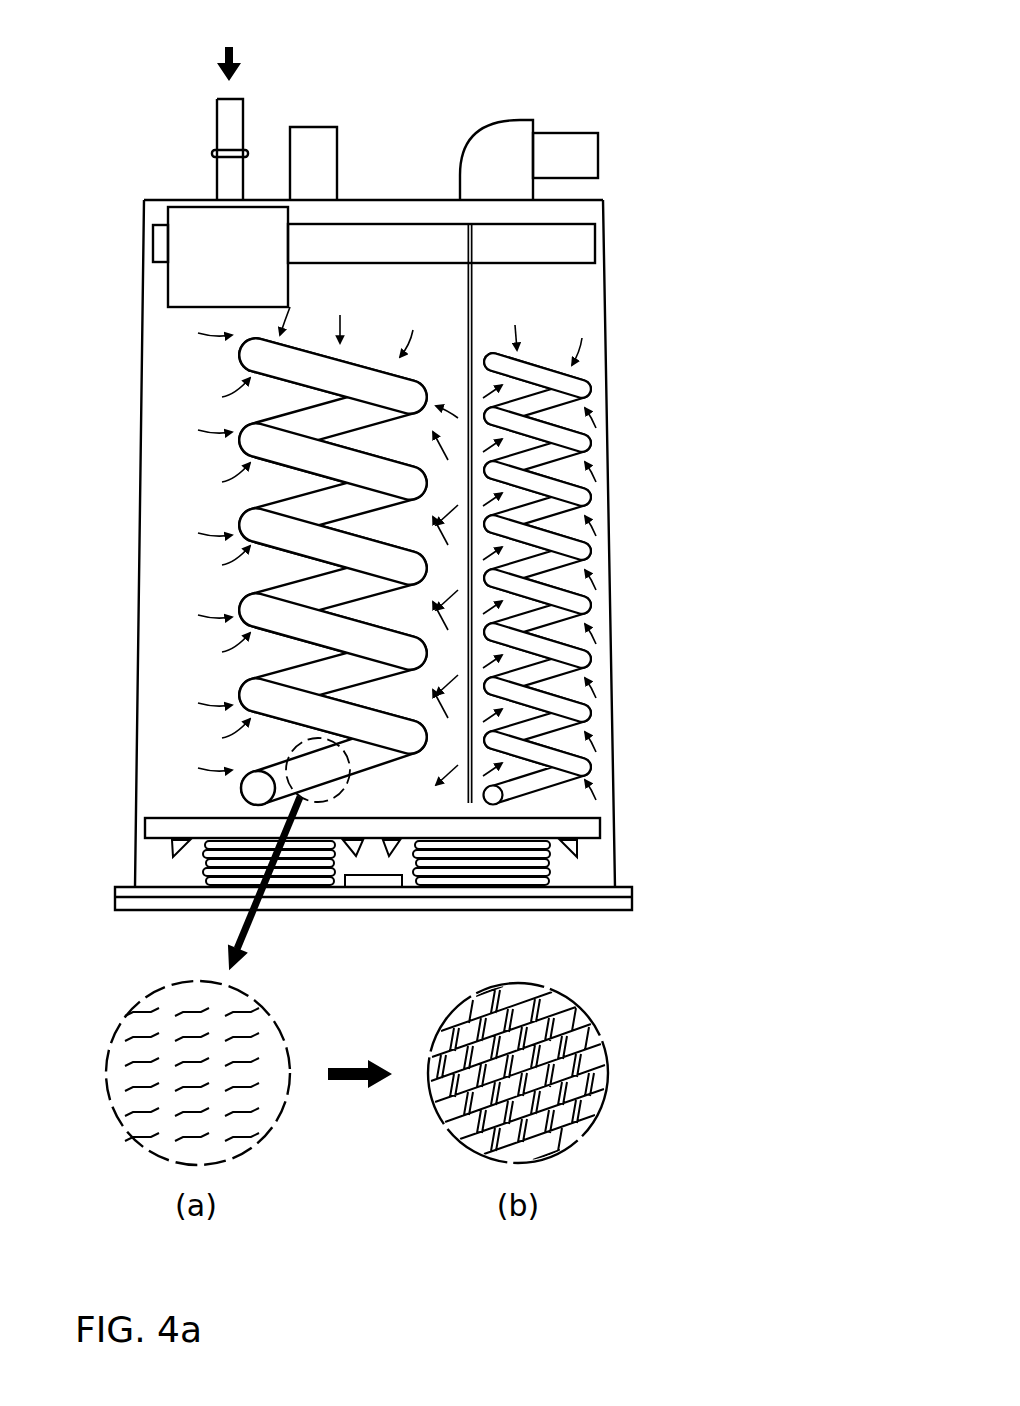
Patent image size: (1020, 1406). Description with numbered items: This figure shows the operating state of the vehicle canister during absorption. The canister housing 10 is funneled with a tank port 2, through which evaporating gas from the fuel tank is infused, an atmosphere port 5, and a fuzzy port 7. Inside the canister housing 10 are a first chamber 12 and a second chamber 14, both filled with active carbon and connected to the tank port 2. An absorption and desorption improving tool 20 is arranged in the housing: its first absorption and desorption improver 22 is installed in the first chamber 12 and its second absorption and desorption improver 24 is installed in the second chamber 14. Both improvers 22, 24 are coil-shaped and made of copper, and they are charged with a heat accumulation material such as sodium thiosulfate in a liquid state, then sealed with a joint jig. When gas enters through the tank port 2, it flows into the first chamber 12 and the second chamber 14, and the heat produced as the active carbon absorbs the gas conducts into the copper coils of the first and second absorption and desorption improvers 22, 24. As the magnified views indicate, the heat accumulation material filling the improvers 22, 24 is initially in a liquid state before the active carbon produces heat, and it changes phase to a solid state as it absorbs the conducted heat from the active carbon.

The tank port 2 is at (228, 108).
The atmosphere port 5 is at (563, 145).
The fuzzy port 7 is at (315, 140).
The canister housing 10 is at (454, 555).
The first chamber 12 is at (443, 337).
The second chamber 14 is at (573, 282).
The absorption and desorption improving tool 20 is at (512, 661).
The first absorption and desorption improver 22 is at (410, 728).
The second absorption and desorption improver 24 is at (592, 767).